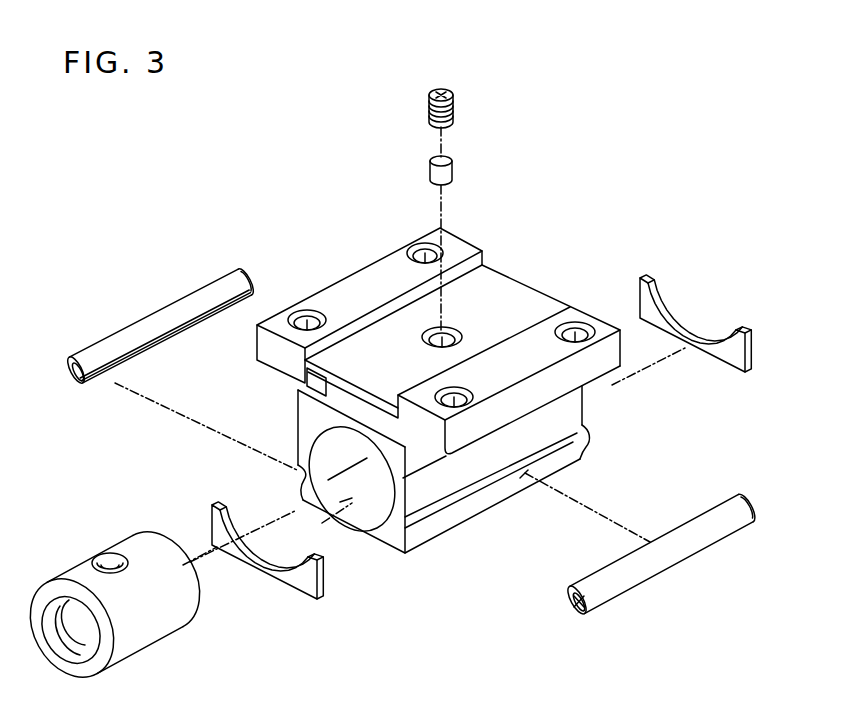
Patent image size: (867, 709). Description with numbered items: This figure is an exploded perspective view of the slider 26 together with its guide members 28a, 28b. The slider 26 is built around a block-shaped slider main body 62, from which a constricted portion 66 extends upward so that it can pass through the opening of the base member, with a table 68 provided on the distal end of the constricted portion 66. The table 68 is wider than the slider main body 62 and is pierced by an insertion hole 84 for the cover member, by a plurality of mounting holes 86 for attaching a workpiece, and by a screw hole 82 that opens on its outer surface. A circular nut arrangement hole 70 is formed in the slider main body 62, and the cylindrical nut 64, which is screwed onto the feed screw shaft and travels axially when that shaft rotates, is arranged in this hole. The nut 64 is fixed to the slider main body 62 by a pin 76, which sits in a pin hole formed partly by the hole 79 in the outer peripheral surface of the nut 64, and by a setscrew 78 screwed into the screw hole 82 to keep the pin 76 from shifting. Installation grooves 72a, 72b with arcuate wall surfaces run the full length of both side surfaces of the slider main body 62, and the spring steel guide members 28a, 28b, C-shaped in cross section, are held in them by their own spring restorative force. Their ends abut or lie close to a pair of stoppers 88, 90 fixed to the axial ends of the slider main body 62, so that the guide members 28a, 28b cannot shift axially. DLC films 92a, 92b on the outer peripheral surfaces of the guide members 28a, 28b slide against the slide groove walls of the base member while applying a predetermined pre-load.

The slider 26 is at (652, 252).
The guide member 28a is at (568, 604).
The guide member 28b is at (66, 383).
The slider main body 62 is at (572, 408).
The nut 64 is at (155, 633).
The constricted portion 66 is at (345, 418).
The table 68 is at (372, 273).
The nut arrangement hole 70 is at (362, 512).
The installation groove 72a is at (469, 500).
The installation groove 72b is at (296, 477).
The pin 76 is at (456, 167).
The setscrew 78 is at (444, 89).
The hole 79 is at (110, 557).
The screw hole 82 is at (448, 328).
The insertion hole 84 is at (306, 398).
The mounting holes 86 is at (573, 322).
The stopper 88 is at (730, 358).
The stopper 90 is at (305, 587).
The DLC film 92a is at (720, 530).
The DLC film 92b is at (190, 292).